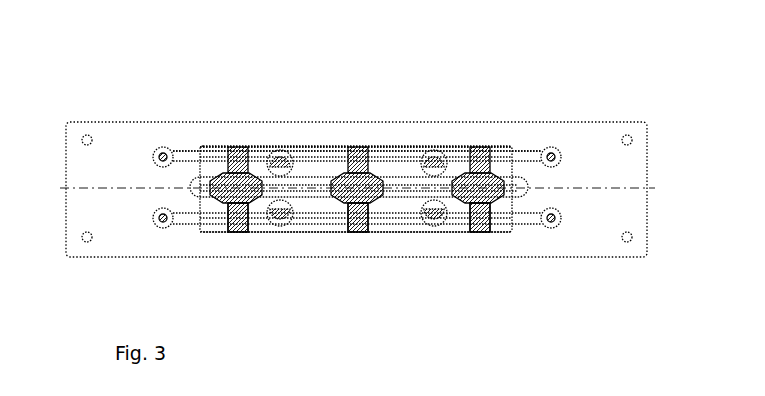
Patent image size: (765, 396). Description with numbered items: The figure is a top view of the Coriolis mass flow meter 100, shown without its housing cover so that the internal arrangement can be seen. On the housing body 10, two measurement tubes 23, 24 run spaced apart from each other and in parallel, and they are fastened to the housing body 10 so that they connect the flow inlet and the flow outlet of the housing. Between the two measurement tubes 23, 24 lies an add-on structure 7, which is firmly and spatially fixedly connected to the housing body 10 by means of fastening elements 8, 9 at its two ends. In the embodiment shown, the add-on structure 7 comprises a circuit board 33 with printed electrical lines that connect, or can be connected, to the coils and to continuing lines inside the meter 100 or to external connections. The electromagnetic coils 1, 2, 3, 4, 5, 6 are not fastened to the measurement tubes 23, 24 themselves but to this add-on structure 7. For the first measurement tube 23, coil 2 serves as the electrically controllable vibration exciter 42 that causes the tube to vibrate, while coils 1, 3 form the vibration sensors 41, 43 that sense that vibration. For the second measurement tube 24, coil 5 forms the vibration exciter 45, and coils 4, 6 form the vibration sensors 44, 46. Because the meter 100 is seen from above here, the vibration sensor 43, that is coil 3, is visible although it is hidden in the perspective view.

The Coriolis mass flow meter 100 is at (417, 282).
The housing body 10 is at (128, 158).
The add-on structure 7 is at (523, 138).
The fastening element 8 is at (507, 147).
The fastening element 9 is at (508, 228).
The first measurement tube 23 is at (193, 155).
The second measurement tube 24 is at (190, 220).
The circuit board 33 is at (387, 182).
The electromagnetic coil 1 is at (233, 148).
The electromagnetic coil 2 is at (352, 148).
The electromagnetic coil 3 is at (472, 148).
The electromagnetic coil 4 is at (228, 215).
The electromagnetic coil 5 is at (354, 215).
The electromagnetic coil 6 is at (472, 218).
The vibration sensor 41 is at (247, 148).
The vibration exciter 42 is at (368, 148).
The vibration sensor 43 is at (487, 148).
The vibration sensor 44 is at (244, 218).
The vibration exciter 45 is at (365, 222).
The vibration sensor 46 is at (487, 220).